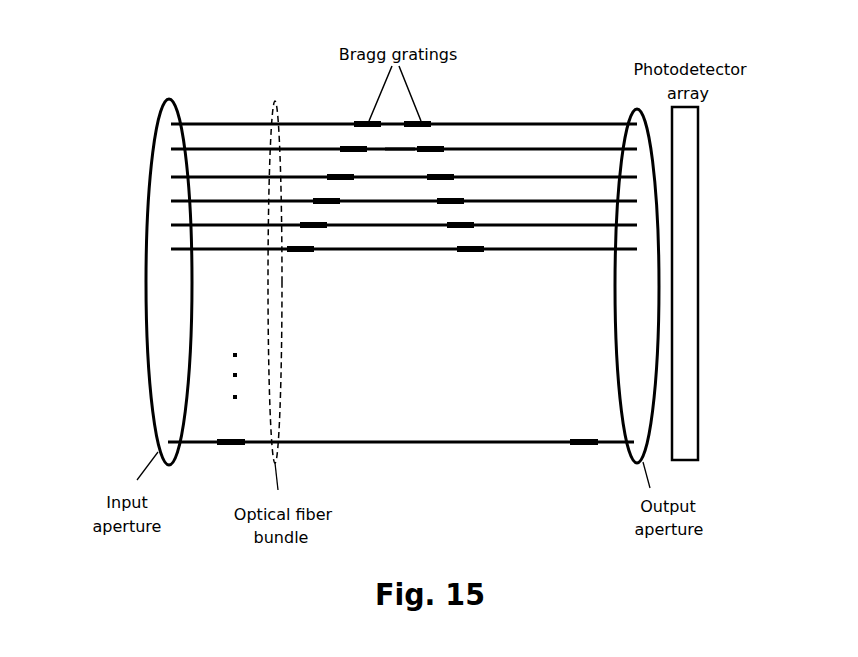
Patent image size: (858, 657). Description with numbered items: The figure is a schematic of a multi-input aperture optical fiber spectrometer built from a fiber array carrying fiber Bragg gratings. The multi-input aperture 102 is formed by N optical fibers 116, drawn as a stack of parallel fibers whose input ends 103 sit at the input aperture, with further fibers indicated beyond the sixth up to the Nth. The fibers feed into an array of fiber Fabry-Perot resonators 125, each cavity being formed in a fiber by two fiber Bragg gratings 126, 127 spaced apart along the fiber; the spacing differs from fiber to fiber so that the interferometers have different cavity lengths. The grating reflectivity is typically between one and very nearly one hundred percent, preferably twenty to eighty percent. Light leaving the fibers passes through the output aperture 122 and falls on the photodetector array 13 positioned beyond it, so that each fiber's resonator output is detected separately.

The multi-input aperture 102 is at (143, 263).
The fiber input ends 103 is at (170, 177).
The optical fibers 116 is at (207, 123).
The fiber Bragg grating 126 is at (359, 122).
The fiber Bragg grating 127 is at (428, 122).
The fiber Fabry-Perot resonators 125 is at (415, 172).
The output aperture 122 is at (630, 360).
The photodetector array 13 is at (687, 220).